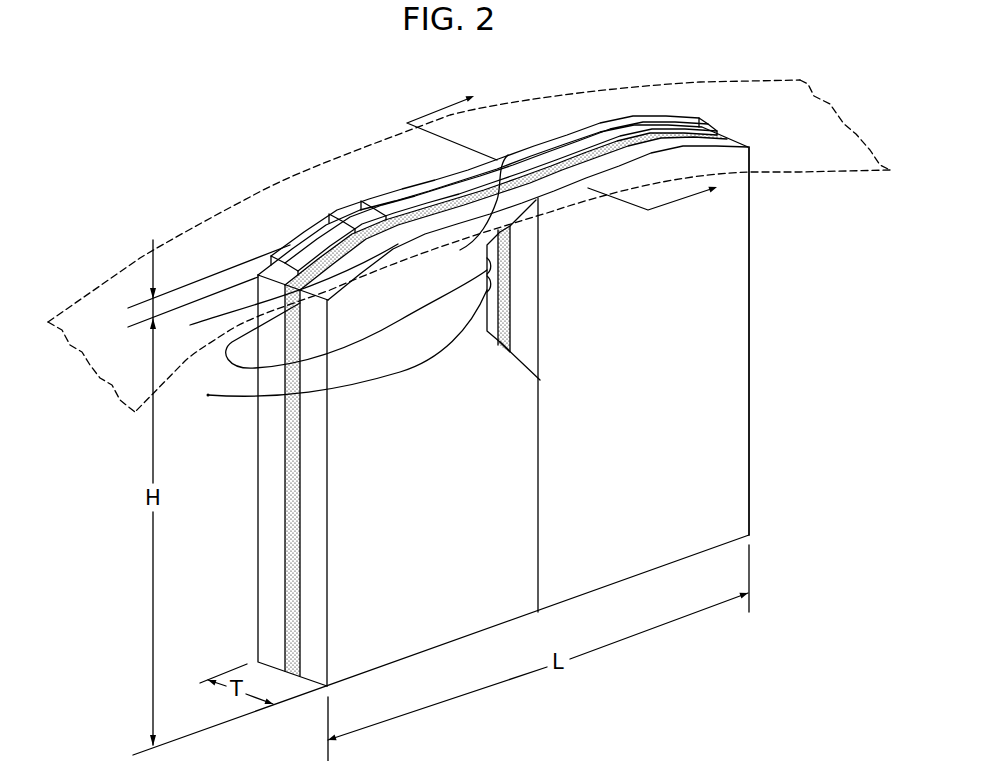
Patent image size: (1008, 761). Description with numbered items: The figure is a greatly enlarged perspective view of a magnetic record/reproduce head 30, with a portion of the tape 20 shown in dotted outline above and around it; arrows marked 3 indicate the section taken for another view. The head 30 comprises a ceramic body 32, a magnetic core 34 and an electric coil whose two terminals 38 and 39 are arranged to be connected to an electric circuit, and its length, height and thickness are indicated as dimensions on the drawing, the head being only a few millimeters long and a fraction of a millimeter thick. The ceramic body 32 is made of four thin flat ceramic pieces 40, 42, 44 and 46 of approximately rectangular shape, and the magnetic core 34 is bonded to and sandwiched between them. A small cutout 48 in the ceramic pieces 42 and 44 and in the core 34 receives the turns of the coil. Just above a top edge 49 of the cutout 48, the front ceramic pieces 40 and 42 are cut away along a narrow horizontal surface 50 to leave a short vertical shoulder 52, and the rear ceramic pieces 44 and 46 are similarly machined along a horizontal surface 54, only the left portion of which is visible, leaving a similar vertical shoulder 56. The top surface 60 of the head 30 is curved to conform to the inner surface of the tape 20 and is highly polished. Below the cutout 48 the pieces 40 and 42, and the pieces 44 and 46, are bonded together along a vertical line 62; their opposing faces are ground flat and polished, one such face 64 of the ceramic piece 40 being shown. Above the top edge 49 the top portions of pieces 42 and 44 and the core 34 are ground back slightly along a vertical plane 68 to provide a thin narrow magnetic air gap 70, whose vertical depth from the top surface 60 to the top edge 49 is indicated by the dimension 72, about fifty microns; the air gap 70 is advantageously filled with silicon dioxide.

The tape 20 is at (784, 98).
The magnetic record/reproduce head 30 is at (481, 169).
The ceramic body 32 is at (754, 345).
The magnetic core 34 is at (290, 430).
The terminal 38 is at (190, 325).
The terminal 39 is at (400, 370).
The ceramic piece 40 is at (720, 455).
The ceramic piece 42 is at (343, 650).
The ceramic piece 44 is at (257, 596).
The ceramic piece 46 is at (682, 123).
The cutout 48 is at (500, 342).
The top edge 49 is at (538, 200).
The horizontal surface 50 is at (628, 160).
The vertical shoulder 52 is at (577, 160).
The horizontal surface 54 is at (345, 215).
The vertical shoulder 56 is at (368, 207).
The top surface 60 is at (412, 182).
The vertical line 62 is at (540, 488).
The face 64 is at (530, 332).
The vertical plane 68 is at (471, 223).
The magnetic air gap 70 is at (513, 160).
The vertical depth 72 is at (153, 308).
The section line 3- 3 is at (563, 147).